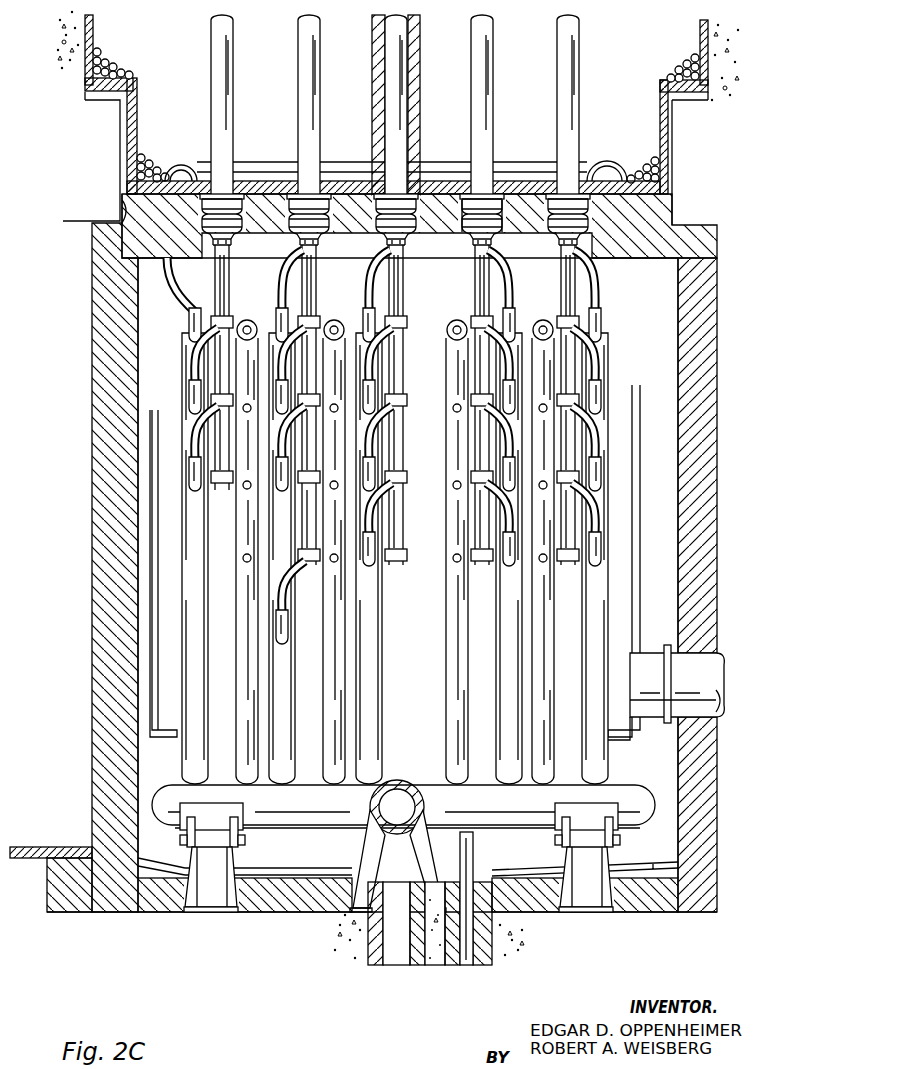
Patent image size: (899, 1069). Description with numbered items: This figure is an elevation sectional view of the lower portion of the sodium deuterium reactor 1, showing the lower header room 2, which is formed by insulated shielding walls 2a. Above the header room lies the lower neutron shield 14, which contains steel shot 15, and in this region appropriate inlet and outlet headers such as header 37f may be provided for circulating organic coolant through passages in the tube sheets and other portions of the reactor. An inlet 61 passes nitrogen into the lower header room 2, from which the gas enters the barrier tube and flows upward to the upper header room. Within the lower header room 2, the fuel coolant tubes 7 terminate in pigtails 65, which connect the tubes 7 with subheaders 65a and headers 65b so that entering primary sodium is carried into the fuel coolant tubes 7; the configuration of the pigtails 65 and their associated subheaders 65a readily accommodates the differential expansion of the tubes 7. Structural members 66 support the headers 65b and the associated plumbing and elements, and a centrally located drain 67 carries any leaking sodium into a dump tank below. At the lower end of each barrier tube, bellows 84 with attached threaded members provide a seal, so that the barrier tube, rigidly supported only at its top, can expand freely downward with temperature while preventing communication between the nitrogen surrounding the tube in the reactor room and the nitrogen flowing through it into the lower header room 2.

The sodium deuterium reactor 1 is at (90, 568).
The lower header room 2 is at (157, 368).
The insulated shielding walls 2a is at (540, 181).
The fuel coolant tubes 7 is at (230, 262).
The lower neutron shield 14 is at (176, 82).
The steel shot 15 is at (142, 178).
The inlet and outlet header 37f is at (598, 163).
The inlet 61 is at (680, 652).
The pigtails 65 is at (292, 304).
The subheaders 65a is at (380, 655).
The headers 65b is at (420, 790).
The structural members 66 is at (240, 860).
The drain 67 is at (395, 945).
The bellows 84 is at (494, 238).